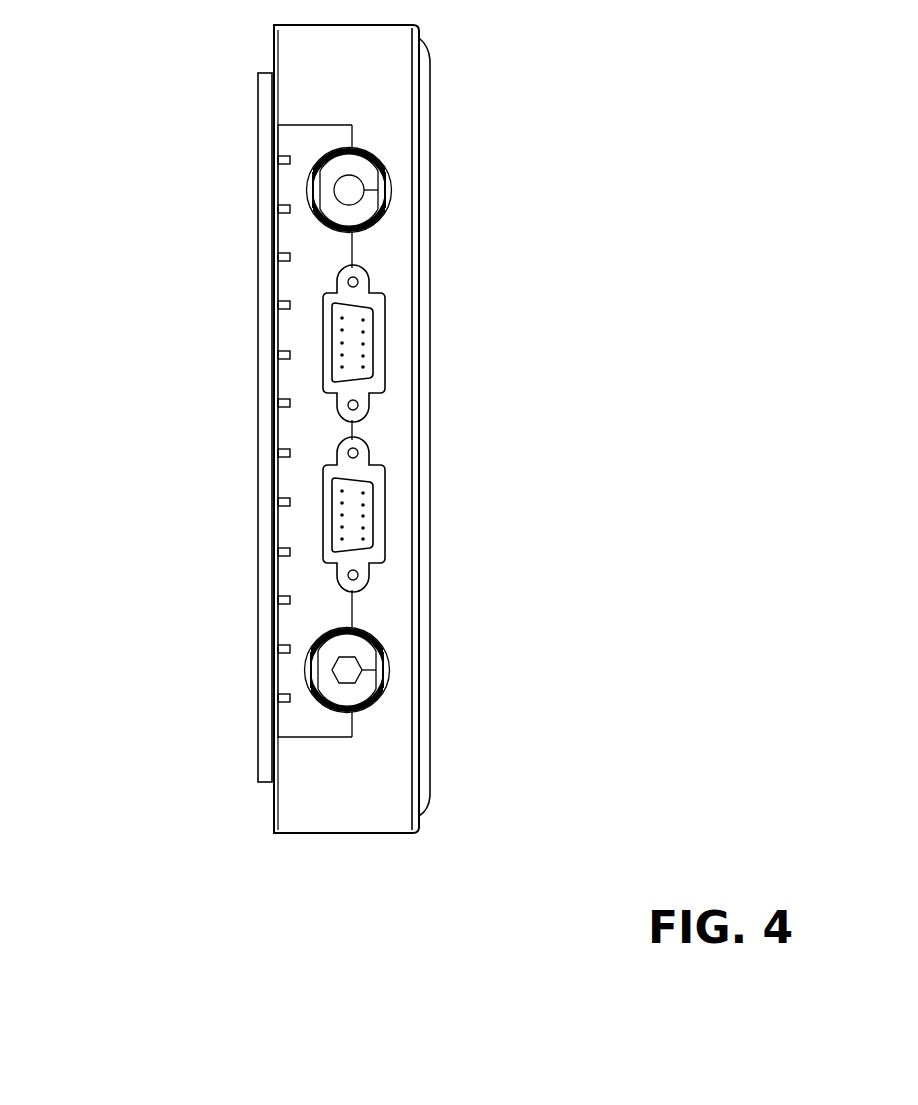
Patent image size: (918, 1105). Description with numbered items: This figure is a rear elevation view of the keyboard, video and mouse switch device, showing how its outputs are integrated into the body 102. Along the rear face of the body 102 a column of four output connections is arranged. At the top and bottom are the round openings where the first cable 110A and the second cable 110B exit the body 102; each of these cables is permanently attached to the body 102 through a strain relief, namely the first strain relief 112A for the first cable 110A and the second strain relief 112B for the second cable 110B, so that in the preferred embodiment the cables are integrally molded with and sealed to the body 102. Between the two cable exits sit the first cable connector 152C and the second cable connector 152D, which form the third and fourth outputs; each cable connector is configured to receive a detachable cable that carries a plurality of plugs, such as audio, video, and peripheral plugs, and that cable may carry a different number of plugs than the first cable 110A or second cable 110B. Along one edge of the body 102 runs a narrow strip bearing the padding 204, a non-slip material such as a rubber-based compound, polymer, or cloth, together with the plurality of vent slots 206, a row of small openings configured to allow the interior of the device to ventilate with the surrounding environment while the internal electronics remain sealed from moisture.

The body 102 is at (272, 805).
The padding 204 is at (258, 746).
The plurality of vent slots 206 is at (278, 161).
The first cable 110A is at (386, 660).
The second cable 110B is at (387, 183).
The first strain relief 112A is at (381, 637).
The second strain relief 112B is at (382, 158).
The first cable connector 152C is at (385, 503).
The second cable connector 152D is at (386, 321).